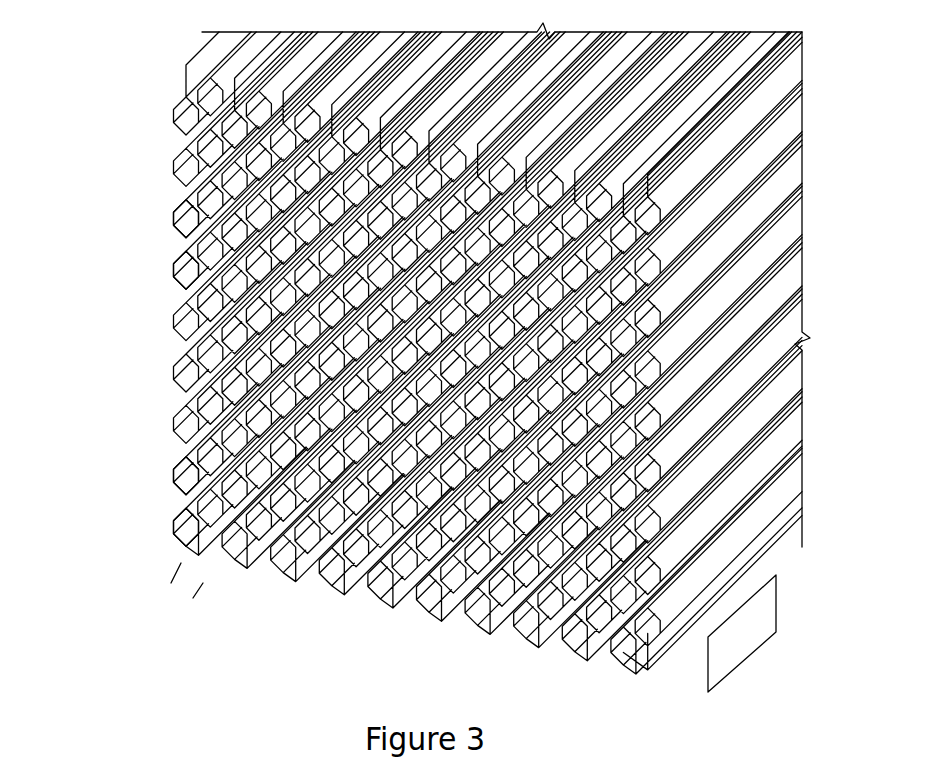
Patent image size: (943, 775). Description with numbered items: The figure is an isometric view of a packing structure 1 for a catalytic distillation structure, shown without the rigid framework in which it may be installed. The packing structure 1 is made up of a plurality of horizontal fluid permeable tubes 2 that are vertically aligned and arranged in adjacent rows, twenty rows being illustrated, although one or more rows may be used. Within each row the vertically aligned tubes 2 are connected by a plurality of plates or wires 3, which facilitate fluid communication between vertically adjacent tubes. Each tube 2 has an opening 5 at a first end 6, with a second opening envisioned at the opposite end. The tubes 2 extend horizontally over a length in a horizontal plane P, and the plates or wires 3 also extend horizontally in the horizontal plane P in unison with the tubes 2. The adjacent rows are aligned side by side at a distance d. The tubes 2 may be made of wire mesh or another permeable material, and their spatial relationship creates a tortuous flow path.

The packing structure 1 is at (118, 132).
The horizontal fluid permeable tubes 2 is at (186, 217).
The plates or wires 3 is at (190, 293).
The opening 5 is at (180, 459).
The first end 6 is at (175, 512).
The distance d is at (130, 550).
The horizontal plane P is at (752, 644).